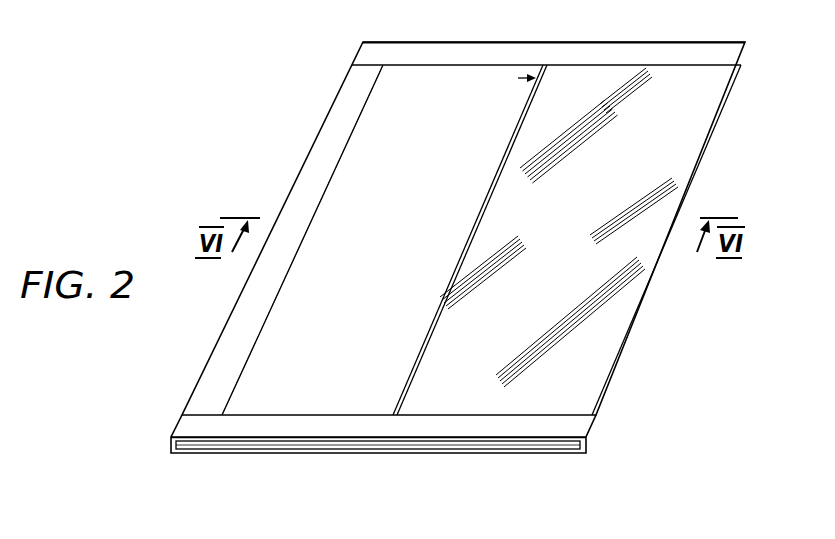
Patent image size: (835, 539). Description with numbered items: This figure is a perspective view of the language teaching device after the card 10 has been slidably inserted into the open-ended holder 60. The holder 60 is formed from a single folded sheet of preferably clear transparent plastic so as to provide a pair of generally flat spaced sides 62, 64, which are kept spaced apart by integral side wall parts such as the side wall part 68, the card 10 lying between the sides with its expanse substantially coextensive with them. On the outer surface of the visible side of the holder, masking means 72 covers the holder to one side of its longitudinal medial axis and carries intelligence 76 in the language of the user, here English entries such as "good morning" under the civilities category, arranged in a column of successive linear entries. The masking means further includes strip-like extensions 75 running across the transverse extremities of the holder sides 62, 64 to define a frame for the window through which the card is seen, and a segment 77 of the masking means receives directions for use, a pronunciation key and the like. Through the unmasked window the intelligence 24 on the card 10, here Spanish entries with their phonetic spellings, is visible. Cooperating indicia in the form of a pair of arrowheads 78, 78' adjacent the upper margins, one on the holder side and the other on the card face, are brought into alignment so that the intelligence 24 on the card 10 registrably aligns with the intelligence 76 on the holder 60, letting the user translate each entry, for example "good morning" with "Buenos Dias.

The card 10 is at (470, 454).
The intelligence 24 is at (530, 193).
The holder 60 is at (196, 361).
The holder side 62 is at (49, 0).
The holder side 64 is at (127, 0).
The side wall part 68 is at (346, 0).
The masking means 72 is at (442, 153).
The strip-like extension 75 is at (237, 0).
The intelligence 76 is at (372, 101).
The masking means segment 77 is at (298, 204).
The arrowhead 78 is at (470, 207).
The arrowhead 78' is at (493, 207).